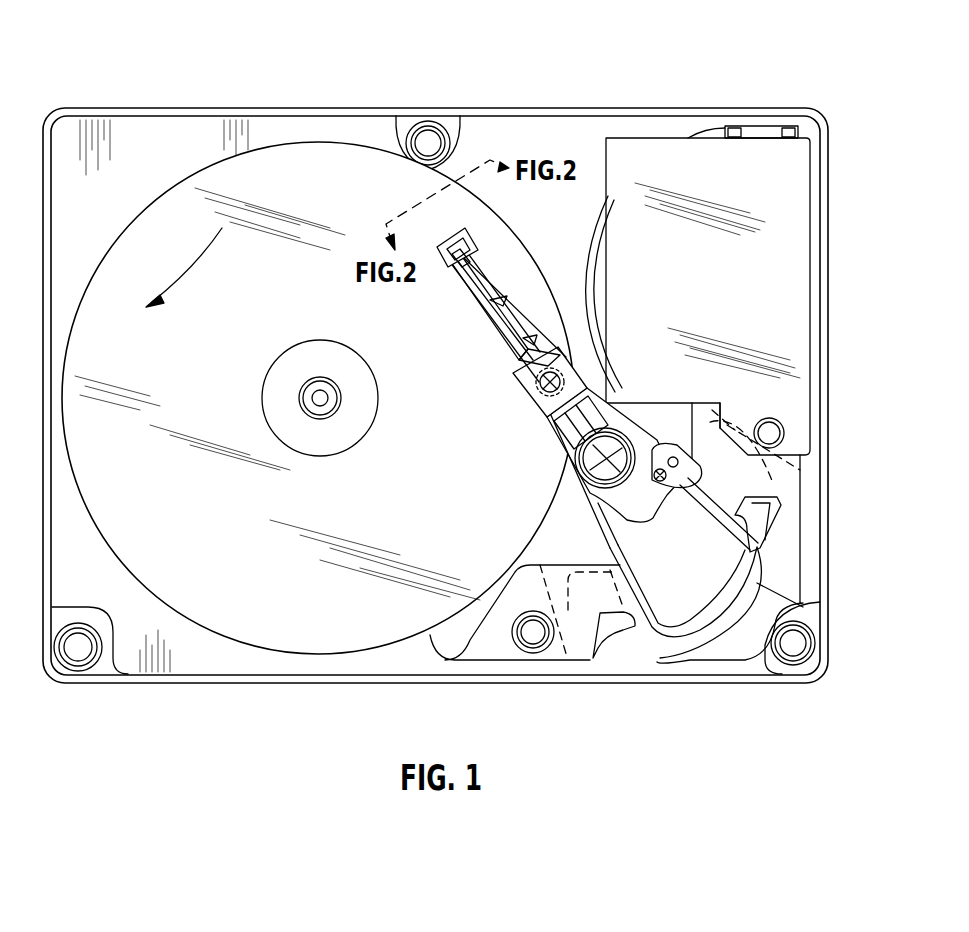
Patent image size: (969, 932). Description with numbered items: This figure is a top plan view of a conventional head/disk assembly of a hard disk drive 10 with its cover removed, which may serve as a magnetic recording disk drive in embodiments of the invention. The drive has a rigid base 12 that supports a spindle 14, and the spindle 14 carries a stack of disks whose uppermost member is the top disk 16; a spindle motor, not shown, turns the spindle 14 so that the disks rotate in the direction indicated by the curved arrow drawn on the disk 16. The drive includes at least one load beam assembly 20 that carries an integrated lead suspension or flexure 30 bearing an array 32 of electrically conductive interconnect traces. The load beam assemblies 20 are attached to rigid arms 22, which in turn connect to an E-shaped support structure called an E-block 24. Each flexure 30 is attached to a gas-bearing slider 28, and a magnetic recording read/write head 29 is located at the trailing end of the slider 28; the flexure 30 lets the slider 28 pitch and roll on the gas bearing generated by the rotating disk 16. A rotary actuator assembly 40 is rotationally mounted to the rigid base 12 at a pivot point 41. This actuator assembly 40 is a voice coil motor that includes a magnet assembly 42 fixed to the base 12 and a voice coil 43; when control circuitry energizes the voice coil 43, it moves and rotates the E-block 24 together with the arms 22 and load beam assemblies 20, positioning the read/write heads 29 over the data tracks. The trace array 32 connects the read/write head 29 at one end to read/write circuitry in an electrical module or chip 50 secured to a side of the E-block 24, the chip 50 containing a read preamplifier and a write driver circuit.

The disk drive 10 is at (118, 45).
The rigid base 12 is at (203, 683).
The spindle 14 is at (320, 340).
The top disk 16 is at (318, 637).
The load beam assembly 20 is at (422, 252).
The rigid arm 22 is at (532, 397).
The E-block 24 is at (557, 452).
The gas-bearing slider 28 is at (477, 243).
The read/write head 29 is at (458, 240).
The flexure 30 is at (476, 254).
The array of interconnect traces 32 is at (493, 300).
The rotary actuator assembly 40 is at (555, 524).
The pivot point 41 is at (567, 480).
The magnet assembly 42 is at (712, 455).
The voice coil 43 is at (762, 552).
The electrical module or chip 50 is at (652, 418).